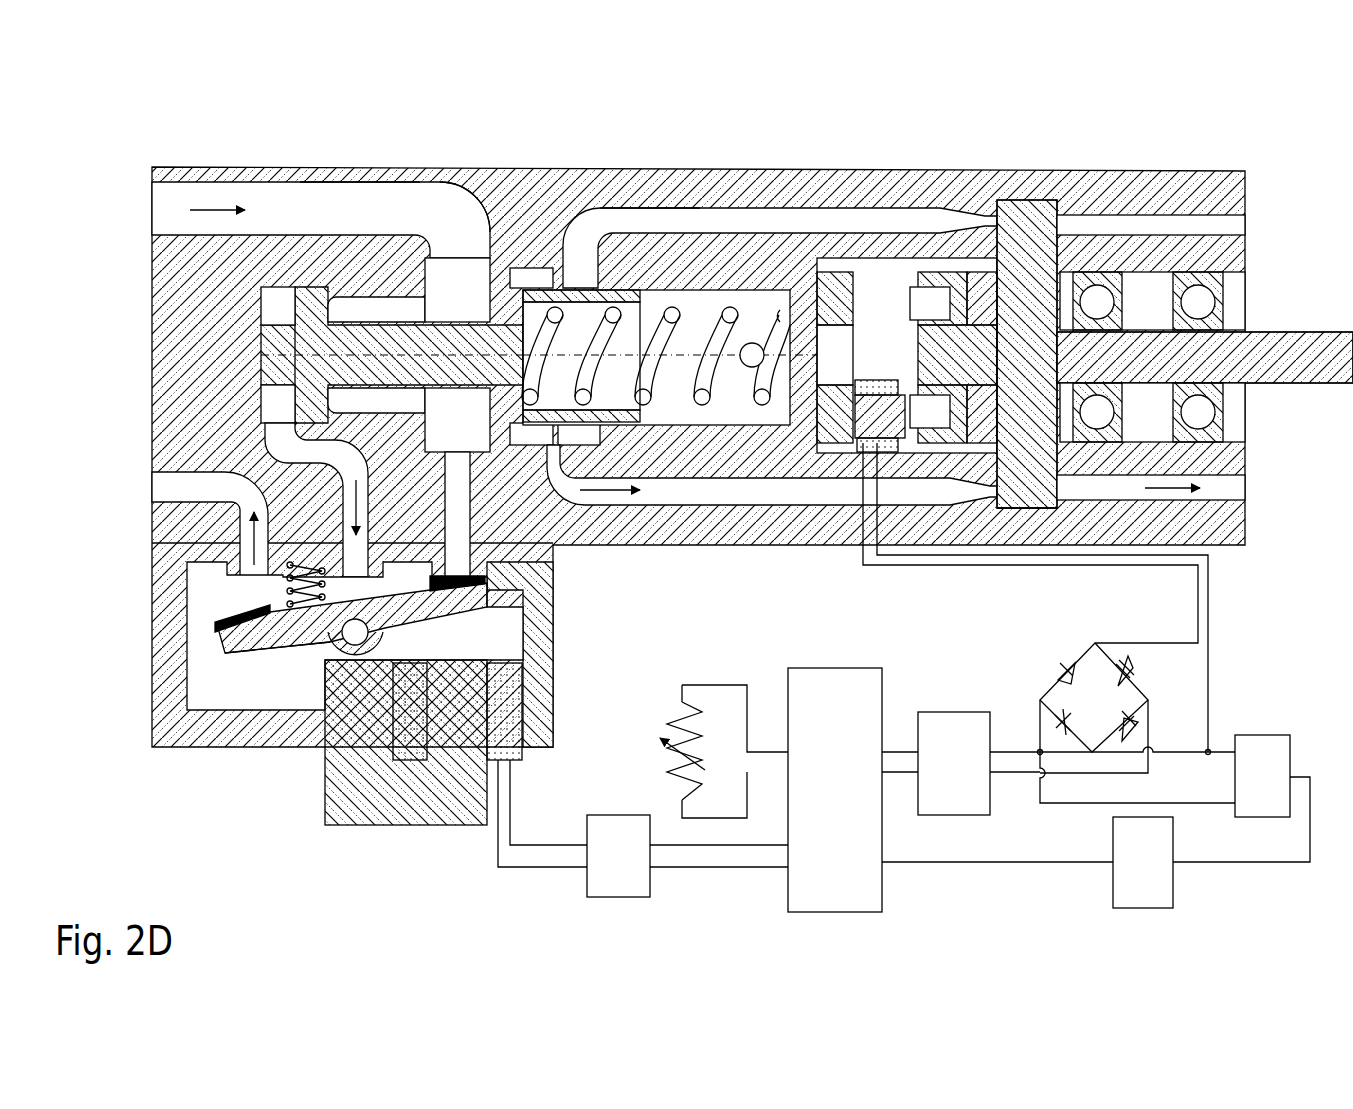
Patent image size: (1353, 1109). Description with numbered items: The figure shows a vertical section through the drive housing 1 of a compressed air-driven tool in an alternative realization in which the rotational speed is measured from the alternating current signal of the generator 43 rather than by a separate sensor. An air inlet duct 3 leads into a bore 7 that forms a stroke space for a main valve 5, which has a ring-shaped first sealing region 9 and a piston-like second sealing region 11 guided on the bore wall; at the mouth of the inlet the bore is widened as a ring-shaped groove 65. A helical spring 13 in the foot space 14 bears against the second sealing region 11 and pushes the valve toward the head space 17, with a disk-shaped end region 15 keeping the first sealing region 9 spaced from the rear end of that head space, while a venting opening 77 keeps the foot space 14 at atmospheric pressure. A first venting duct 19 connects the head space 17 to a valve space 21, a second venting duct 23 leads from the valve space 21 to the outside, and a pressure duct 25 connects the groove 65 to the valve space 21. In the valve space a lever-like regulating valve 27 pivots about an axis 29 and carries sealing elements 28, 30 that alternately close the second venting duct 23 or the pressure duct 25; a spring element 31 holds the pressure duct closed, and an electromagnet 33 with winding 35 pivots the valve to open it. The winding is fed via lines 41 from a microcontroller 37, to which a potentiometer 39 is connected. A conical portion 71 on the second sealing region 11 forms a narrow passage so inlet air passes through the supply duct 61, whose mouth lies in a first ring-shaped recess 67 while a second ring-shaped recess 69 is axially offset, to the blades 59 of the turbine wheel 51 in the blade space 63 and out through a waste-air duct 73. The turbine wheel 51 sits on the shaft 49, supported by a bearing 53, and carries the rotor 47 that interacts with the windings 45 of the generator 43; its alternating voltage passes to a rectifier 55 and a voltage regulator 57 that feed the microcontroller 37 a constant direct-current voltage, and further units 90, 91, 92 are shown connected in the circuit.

The drive housing 1 is at (148, 790).
The air inlet duct 3 is at (265, 197).
The main valve 5 is at (400, 342).
The bore 7 is at (323, 455).
The first sealing region 9 is at (322, 240).
The second sealing region 11 is at (622, 219).
The helical spring 13 is at (697, 327).
The foot space 14 is at (713, 300).
The disk-shaped end region 15 is at (278, 382).
The head space 17 is at (278, 308).
The first venting duct 19 is at (283, 483).
The valve space 21 is at (222, 688).
The second venting duct 23 is at (217, 490).
The pressure duct 25 is at (458, 500).
The regulating valve 27 is at (306, 640).
The sealing element 28 is at (245, 618).
The axis 29 is at (355, 648).
The sealing element 30 is at (360, 660).
The spring element 31 is at (300, 575).
The electromagnet 33 is at (482, 830).
The winding 35 is at (410, 715).
The microcontroller 37 is at (825, 805).
The potentiometer 39 is at (690, 725).
The lines 41 is at (553, 872).
The generator 43 is at (888, 275).
The windings 45 is at (872, 387).
The rotor 47 is at (940, 283).
The shaft 49 is at (1265, 345).
The turbine wheel 51 is at (1030, 268).
The bearing 53 is at (1100, 300).
The rectifier 55 is at (1098, 695).
The voltage regulator 57 is at (952, 760).
The blades 59 is at (1033, 492).
The supply duct 61 is at (755, 490).
The blade space 63 is at (868, 448).
The ring-shaped groove 65 is at (457, 355).
The first ring-shaped recess 67 is at (533, 435).
The second ring-shaped recess 69 is at (577, 435).
The conical portion 71 is at (528, 275).
The waste-air duct 73 is at (1240, 492).
The venting opening 77 is at (752, 355).
The energy store 90 is at (1265, 758).
The consumer 91 is at (1140, 895).
The switch 92 is at (615, 840).